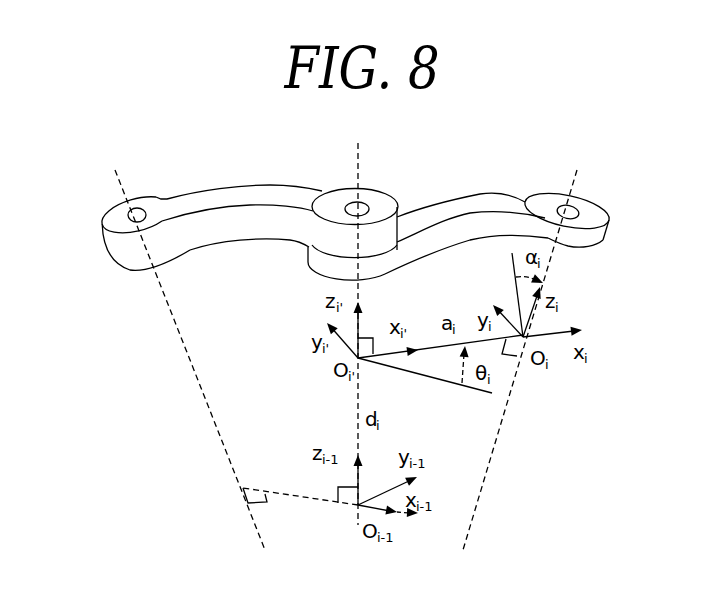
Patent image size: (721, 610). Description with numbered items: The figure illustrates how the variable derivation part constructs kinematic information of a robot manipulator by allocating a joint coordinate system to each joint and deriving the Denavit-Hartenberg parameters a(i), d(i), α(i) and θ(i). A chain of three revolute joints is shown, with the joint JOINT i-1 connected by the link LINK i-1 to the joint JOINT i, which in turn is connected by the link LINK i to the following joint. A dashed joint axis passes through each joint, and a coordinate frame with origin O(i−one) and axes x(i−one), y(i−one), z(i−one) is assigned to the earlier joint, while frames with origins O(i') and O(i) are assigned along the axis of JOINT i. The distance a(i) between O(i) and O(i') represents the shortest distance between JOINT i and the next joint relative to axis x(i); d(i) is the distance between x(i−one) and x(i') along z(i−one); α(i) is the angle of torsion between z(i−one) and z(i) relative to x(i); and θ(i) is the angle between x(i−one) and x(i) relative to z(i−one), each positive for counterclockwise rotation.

The joint i-1 JOINT i-1 is at (151, 339).
The link i-1 LINK i-1 is at (239, 217).
The joint i JOINT i is at (354, 319).
The link i LINK i is at (428, 236).